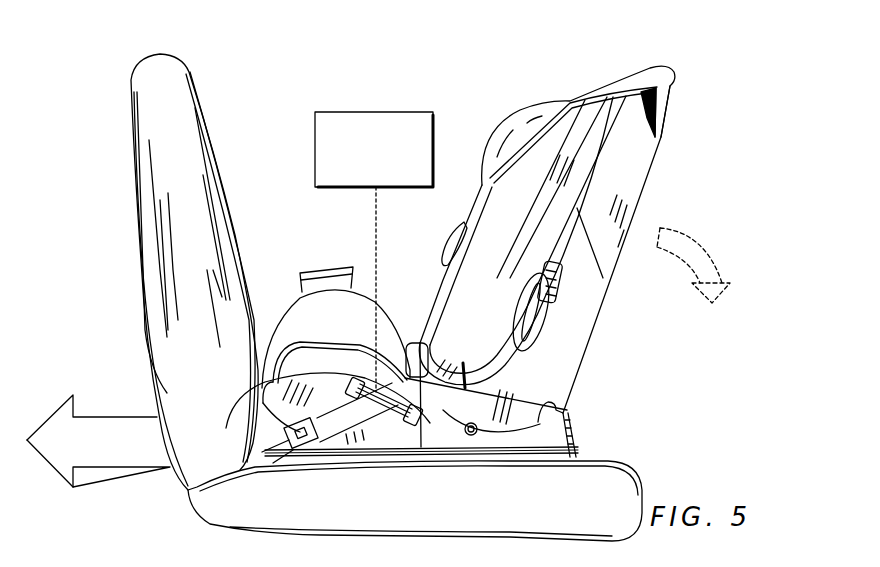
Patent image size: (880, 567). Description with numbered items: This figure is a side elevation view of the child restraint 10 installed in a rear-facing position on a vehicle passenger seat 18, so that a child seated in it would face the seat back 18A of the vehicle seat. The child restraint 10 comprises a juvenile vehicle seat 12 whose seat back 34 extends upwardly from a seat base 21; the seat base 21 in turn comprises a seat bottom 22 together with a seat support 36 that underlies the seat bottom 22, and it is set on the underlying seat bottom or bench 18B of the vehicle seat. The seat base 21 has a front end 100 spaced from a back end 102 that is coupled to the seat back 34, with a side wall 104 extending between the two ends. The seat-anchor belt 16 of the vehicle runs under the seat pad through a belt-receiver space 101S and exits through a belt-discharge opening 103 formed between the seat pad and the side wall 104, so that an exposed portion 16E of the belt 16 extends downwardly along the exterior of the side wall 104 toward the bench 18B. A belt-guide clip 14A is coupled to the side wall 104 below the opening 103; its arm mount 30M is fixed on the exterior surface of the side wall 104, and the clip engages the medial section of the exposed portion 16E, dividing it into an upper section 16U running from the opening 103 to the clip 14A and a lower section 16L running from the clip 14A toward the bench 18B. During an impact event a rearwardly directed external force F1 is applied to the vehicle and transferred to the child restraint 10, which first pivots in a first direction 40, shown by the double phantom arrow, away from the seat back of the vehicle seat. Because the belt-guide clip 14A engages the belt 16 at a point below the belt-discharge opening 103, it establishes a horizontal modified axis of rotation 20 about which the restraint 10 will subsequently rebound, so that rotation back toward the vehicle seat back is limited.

The child restraint 10 is at (694, 79).
The juvenile vehicle seat 12 is at (650, 170).
The belt-guide clip 14A is at (422, 437).
The seat-anchor belt 16 is at (342, 430).
The exposed portion 16E is at (368, 428).
The lower section 16L is at (331, 422).
The upper section 16U is at (384, 362).
The vehicle passenger seat 18 is at (224, 124).
The seat back 18A is at (192, 211).
The seat bottom 18B is at (611, 507).
The modified axis of rotation 20 is at (396, 112).
The seat base 21 is at (652, 411).
The seat bottom 22 is at (697, 418).
The arm mount 30M is at (393, 428).
The seat back 34 is at (603, 247).
The seat support 36 is at (571, 425).
The first direction 40 is at (700, 232).
The front end 100 is at (276, 338).
The belt-receiver space 101S is at (311, 338).
The back end 102 is at (578, 443).
The belt-discharge opening 103 is at (339, 356).
The side wall 104 is at (321, 414).
The external force F1 is at (128, 468).